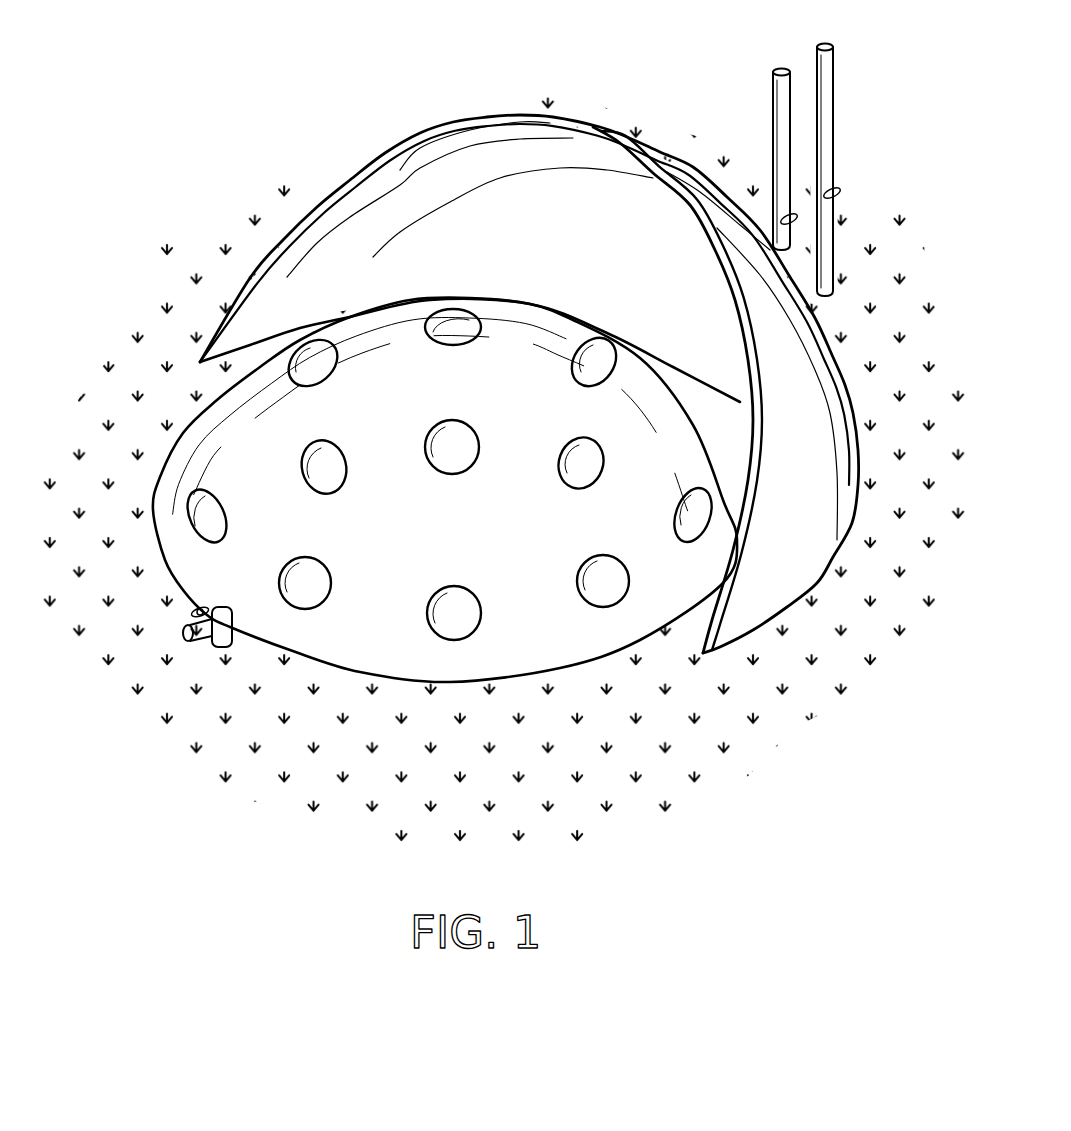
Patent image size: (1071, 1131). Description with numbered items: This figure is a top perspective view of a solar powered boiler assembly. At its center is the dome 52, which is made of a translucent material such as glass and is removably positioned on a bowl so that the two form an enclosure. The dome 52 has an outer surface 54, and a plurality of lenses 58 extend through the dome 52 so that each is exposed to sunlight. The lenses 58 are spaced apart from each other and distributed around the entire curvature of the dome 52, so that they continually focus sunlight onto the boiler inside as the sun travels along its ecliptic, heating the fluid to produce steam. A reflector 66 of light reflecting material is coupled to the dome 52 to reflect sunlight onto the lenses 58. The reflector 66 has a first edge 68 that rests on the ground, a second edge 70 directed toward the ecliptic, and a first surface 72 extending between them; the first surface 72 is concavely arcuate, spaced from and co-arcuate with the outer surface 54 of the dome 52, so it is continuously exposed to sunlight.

The dome 52 is at (214, 445).
The outer surface 54 is at (230, 558).
The lenses 58 is at (428, 425).
The reflector 66 is at (590, 128).
The first edge 68 is at (817, 585).
The second edge 70 is at (433, 131).
The first surface 72 is at (505, 169).